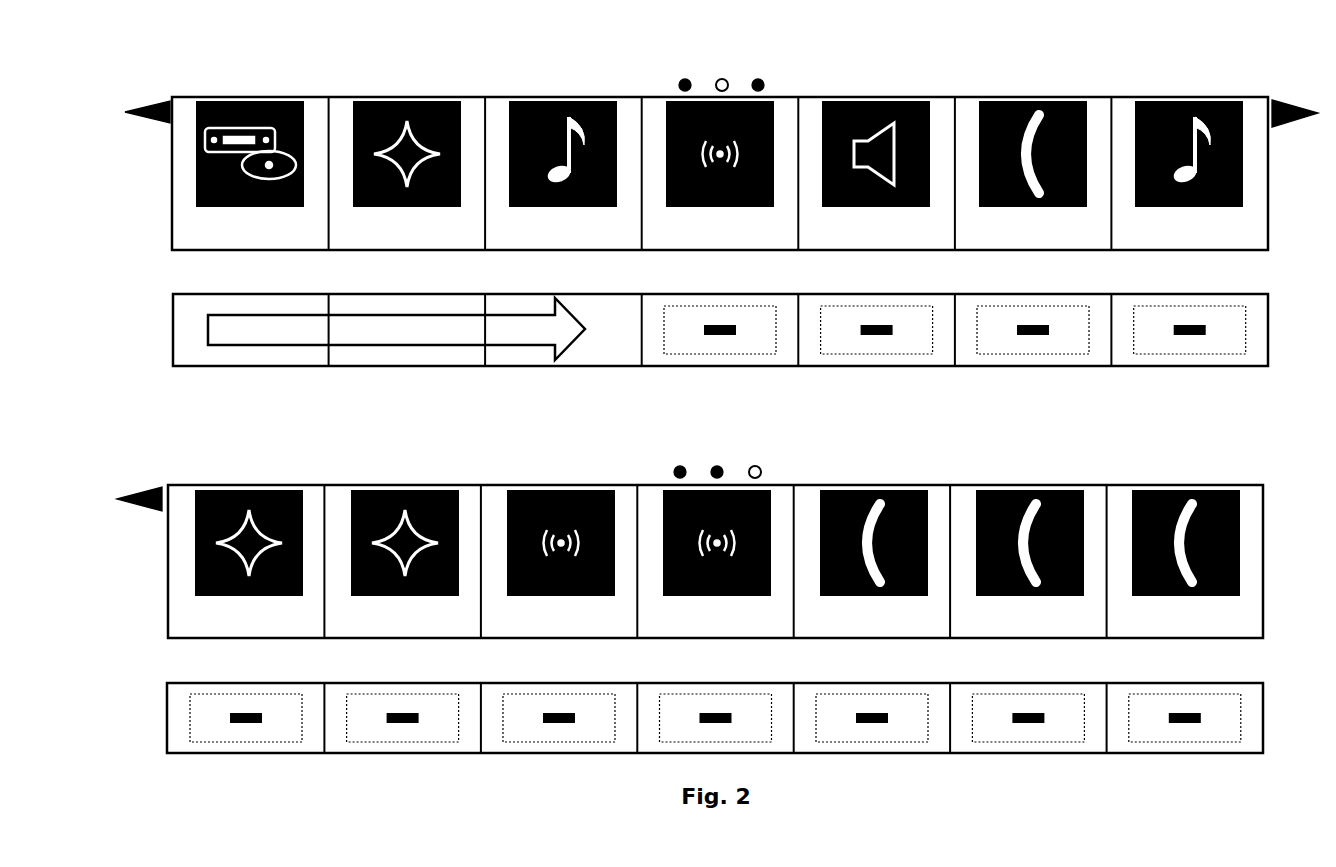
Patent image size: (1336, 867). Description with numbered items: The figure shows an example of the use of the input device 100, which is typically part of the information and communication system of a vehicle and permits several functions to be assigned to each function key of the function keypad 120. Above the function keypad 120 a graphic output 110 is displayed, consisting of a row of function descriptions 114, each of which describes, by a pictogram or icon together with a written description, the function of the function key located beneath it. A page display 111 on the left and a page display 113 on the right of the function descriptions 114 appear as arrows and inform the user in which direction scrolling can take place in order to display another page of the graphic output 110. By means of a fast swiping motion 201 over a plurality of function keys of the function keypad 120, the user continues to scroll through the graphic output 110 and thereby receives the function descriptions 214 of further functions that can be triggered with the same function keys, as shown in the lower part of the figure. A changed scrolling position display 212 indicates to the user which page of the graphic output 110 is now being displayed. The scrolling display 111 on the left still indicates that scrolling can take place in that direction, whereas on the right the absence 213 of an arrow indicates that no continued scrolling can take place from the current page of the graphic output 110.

The input device 100 is at (194, 73).
The graphic output 110 is at (198, 180).
The page display 111 is at (148, 123).
The page display 113 is at (1278, 94).
The function description 114 is at (283, 97).
The function keypad 120 is at (170, 297).
The fast swiping motion 201 is at (363, 344).
The changed scrolling position display 212 is at (716, 452).
The absence of an arrow 213 is at (1277, 474).
The function descriptions of further functions 214 is at (255, 491).